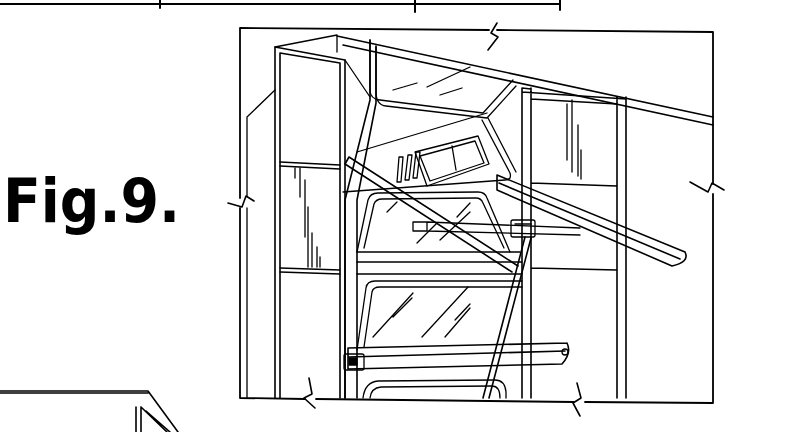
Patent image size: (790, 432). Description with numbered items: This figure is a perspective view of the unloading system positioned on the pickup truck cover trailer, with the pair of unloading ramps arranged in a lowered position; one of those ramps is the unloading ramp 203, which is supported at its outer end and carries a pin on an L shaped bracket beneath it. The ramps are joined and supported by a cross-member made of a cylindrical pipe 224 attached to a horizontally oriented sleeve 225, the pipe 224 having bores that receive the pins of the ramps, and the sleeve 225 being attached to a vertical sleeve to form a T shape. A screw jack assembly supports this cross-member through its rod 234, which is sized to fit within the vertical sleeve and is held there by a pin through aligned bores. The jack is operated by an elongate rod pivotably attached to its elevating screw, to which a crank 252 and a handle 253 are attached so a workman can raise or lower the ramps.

The unloading ramp 203 is at (665, 243).
The cylindrical pipe 224 is at (563, 236).
The horizontally oriented sleeve 225 is at (520, 220).
The rod 234 is at (519, 289).
The crank 252 is at (363, 368).
The handle 253 is at (357, 354).